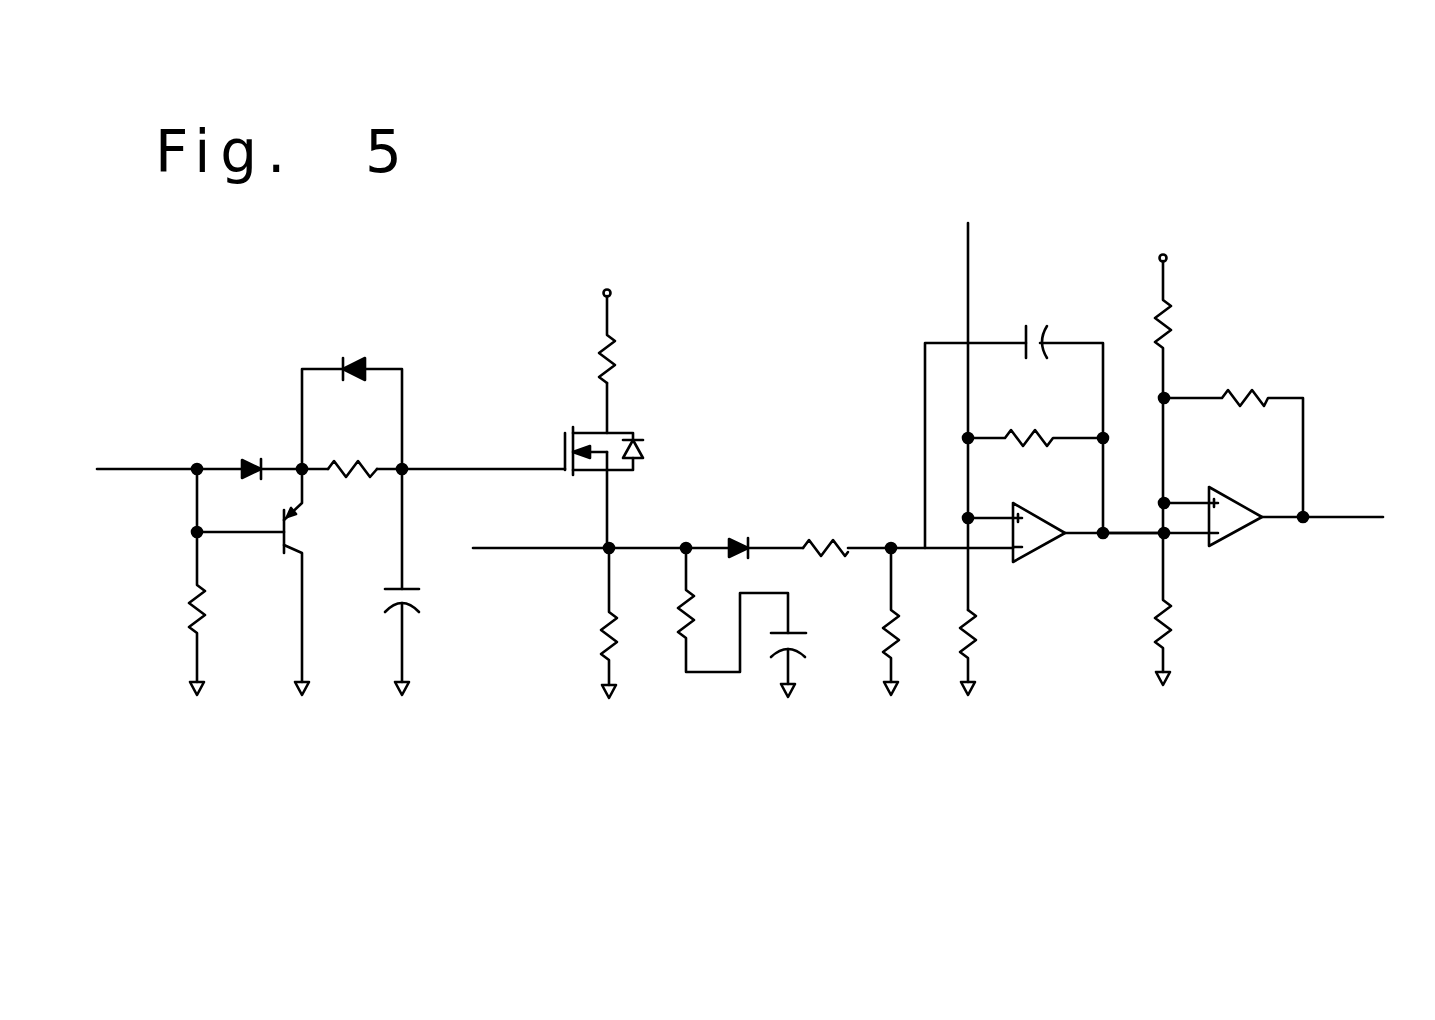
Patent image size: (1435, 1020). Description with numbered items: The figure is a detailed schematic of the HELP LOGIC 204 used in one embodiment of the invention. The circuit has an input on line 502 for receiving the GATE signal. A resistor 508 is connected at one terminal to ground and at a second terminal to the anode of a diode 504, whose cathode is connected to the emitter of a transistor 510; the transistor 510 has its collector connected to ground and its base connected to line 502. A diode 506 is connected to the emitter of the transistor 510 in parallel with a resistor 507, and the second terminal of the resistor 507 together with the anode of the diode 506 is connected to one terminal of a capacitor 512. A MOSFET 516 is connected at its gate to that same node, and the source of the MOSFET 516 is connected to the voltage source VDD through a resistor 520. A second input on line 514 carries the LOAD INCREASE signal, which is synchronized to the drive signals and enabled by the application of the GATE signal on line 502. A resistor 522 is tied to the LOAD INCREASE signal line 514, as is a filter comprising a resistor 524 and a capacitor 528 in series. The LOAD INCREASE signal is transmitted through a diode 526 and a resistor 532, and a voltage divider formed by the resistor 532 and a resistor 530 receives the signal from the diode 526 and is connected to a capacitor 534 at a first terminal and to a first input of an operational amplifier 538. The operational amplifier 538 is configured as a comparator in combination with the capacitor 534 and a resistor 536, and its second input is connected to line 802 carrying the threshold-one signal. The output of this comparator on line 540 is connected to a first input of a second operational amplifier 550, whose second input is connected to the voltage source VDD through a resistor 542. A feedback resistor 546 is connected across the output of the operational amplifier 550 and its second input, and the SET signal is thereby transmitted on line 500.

The HELP LOGIC 204 is at (745, 195).
The line 500 is at (1325, 517).
The line 502 is at (122, 469).
The diode 504 is at (235, 466).
The diode 506 is at (353, 361).
The resistor 507 is at (352, 468).
The resistor 508 is at (204, 594).
The transistor 510 is at (300, 542).
The capacitor 512 is at (410, 612).
The line 514 is at (566, 548).
The MOSFET 516 is at (634, 433).
The resistor 520 is at (610, 352).
The resistor 522 is at (614, 618).
The resistor 524 is at (691, 618).
The diode 526 is at (730, 537).
The capacitor 528 is at (794, 633).
The resistor 530 is at (896, 620).
The resistor 532 is at (846, 545).
The capacitor 534 is at (1023, 330).
The resistor 536 is at (1018, 433).
The operational amplifier 538 is at (1049, 542).
The line 540 is at (1148, 534).
The resistor 542 is at (1168, 306).
The feedback resistor 546 is at (1252, 396).
The operational amplifier 550 is at (1246, 527).
The line 802 is at (968, 252).